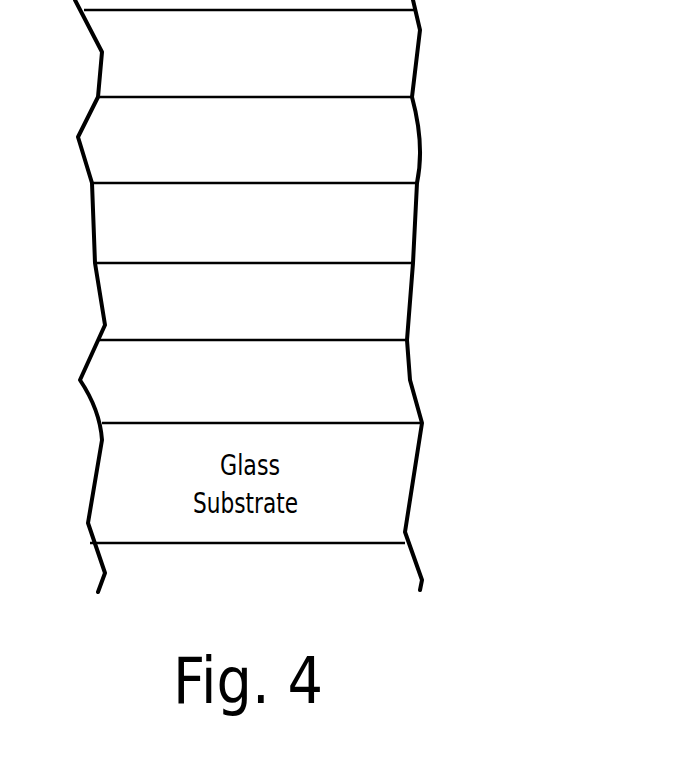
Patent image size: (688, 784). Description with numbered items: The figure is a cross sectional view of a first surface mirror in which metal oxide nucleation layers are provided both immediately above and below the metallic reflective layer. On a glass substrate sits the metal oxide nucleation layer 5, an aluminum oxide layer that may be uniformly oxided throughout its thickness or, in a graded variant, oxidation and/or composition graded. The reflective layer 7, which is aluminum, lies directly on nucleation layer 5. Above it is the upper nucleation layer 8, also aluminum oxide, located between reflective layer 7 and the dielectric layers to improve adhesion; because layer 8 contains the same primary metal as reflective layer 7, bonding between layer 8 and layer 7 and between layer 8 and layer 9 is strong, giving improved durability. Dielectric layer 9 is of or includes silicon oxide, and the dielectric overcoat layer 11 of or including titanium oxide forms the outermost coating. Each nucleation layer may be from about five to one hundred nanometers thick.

The dielectric overcoat layer 11 is at (378, 55).
The dielectric layer 9 is at (378, 142).
The upper nucleation layer 8 is at (378, 220).
The reflective layer 7 is at (378, 303).
The metal oxide nucleation layer 5 is at (378, 388).